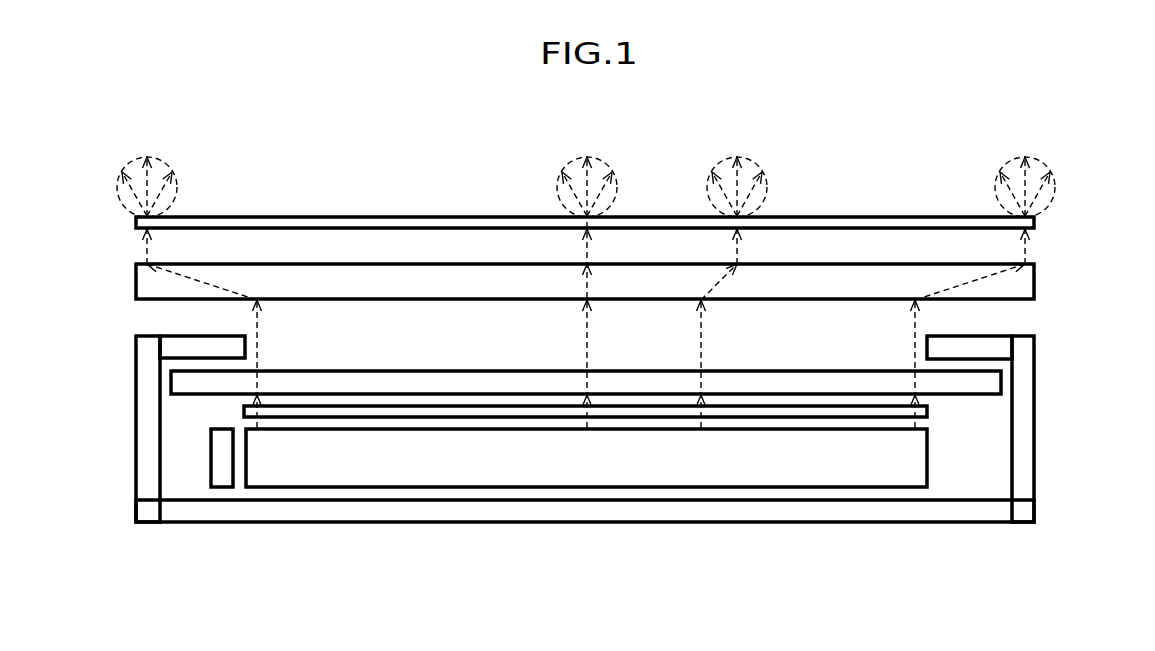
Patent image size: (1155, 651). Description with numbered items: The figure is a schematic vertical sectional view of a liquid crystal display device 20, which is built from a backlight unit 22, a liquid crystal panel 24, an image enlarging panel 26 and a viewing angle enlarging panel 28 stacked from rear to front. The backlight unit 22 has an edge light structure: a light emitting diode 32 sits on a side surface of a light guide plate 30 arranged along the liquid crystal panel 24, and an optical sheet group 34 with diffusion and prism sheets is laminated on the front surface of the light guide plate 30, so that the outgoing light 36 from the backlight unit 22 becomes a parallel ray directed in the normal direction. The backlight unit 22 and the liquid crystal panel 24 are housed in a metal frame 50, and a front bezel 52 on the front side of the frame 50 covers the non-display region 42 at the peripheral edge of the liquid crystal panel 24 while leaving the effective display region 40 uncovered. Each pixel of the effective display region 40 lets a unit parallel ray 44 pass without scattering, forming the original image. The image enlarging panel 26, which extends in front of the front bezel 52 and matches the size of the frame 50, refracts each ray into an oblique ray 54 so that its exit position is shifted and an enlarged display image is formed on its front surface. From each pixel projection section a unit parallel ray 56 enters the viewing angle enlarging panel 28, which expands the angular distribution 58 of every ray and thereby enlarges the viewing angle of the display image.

The liquid crystal display device 20 is at (1048, 117).
The backlight unit 22 is at (935, 407).
The liquid crystal panel 24 is at (1003, 380).
The image enlarging panel 26 is at (1037, 277).
The viewing angle enlarging panel 28 is at (1037, 221).
The light guide plate 30 is at (283, 482).
The light emitting diode 32 is at (208, 475).
The optical sheet group 34 is at (247, 415).
The outgoing light 36 is at (702, 423).
The effective display region 40 is at (362, 378).
The non-display region 42 is at (183, 383).
The unit parallel ray 44 is at (702, 338).
The frame 50 is at (365, 520).
The front bezel 52 is at (178, 340).
The oblique ray 54 is at (702, 300).
The unit parallel ray 56 is at (740, 258).
The angular distribution 58 is at (753, 162).